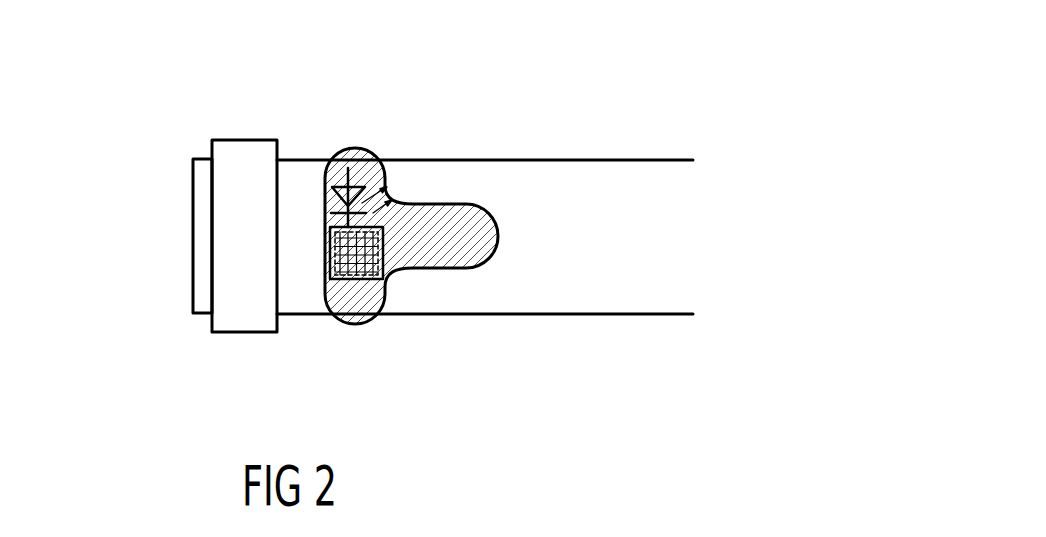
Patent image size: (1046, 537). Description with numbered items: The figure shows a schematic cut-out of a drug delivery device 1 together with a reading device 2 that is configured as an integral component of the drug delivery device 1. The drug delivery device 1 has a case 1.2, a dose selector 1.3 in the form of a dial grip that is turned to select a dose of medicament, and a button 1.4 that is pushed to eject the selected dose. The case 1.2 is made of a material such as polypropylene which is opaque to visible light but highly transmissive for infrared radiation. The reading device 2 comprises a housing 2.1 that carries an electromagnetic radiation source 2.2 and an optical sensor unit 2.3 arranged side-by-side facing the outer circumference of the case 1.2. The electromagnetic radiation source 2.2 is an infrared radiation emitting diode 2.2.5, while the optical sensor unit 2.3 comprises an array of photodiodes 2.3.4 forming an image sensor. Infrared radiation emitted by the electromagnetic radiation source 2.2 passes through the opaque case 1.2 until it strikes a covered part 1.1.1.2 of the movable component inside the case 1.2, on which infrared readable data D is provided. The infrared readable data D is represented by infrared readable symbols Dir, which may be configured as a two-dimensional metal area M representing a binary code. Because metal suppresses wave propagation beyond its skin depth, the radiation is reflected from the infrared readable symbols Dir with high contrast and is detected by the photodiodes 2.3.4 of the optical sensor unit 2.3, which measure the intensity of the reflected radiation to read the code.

The drug delivery device 1 is at (213, 100).
The case 1.2 is at (612, 178).
The dose selector 1.3 is at (223, 285).
The button 1.4 is at (193, 233).
The covered part 1.1.1.2 is at (464, 224).
The reading device 2 is at (419, 145).
The housing 2.1 is at (432, 270).
The electromagnetic radiation source 2.2 is at (358, 183).
The infrared radiation emitting diode 2.2.5 is at (333, 151).
The optical sensor unit 2.3 is at (331, 287).
The photodiodes 2.3.4 is at (378, 328).
The infrared readable data D is at (335, 208).
The two-dimensional metal area M is at (385, 234).
The infrared readable symbols Dir is at (368, 278).